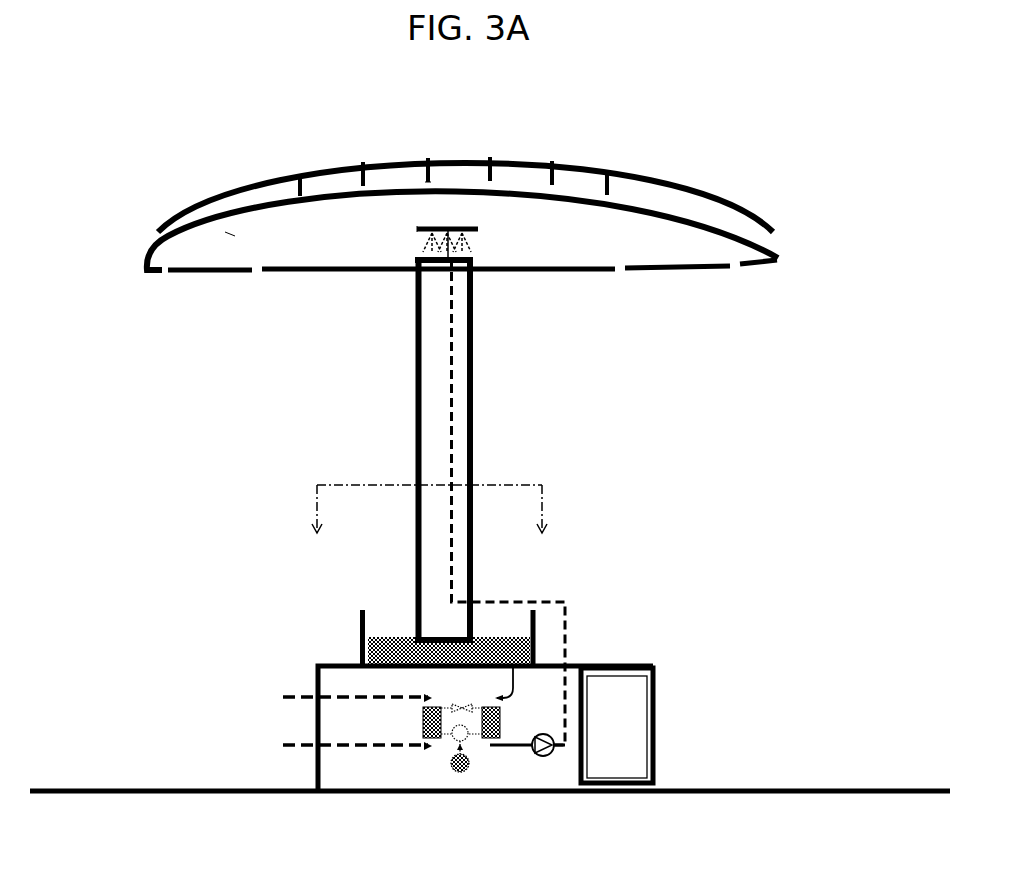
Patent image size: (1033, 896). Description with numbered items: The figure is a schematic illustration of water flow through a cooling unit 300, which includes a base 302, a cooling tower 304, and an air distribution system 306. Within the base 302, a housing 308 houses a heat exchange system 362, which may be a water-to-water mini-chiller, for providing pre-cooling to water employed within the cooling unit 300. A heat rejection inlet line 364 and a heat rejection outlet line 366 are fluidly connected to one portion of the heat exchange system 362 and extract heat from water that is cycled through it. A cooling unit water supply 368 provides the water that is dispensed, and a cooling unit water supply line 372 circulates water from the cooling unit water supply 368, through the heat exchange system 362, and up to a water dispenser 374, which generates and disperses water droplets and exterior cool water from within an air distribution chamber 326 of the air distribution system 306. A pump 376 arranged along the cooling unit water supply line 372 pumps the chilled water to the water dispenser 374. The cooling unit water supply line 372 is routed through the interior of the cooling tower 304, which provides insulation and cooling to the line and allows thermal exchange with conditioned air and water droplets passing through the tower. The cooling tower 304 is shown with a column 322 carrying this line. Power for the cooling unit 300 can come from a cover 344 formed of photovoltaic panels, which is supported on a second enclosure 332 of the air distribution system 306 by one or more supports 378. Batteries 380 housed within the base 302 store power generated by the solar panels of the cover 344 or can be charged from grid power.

The cooling unit 300 is at (875, 136).
The base 302 is at (228, 738).
The cooling tower 304 is at (370, 455).
The air distribution system 306 is at (118, 258).
The housing 308 is at (617, 664).
The column 322 is at (474, 438).
The air distribution chamber 326 is at (441, 275).
The second enclosure 332 is at (237, 218).
The cover 344 is at (237, 190).
The heat exchange system 362 is at (441, 775).
The heat rejection inlet line 364 is at (297, 747).
The heat rejection outlet line 366 is at (303, 697).
The cooling unit water supply 368 is at (360, 647).
The cooling unit water supply line 372 is at (450, 403).
The water dispenser 374 is at (430, 229).
The pump 376 is at (545, 757).
The supports 378 is at (430, 182).
The batteries 380 is at (626, 732).